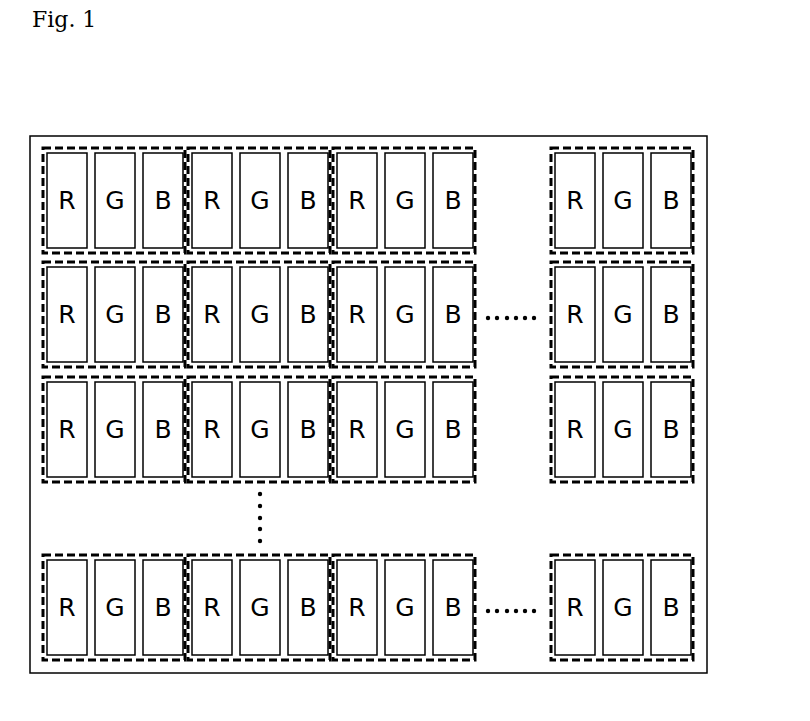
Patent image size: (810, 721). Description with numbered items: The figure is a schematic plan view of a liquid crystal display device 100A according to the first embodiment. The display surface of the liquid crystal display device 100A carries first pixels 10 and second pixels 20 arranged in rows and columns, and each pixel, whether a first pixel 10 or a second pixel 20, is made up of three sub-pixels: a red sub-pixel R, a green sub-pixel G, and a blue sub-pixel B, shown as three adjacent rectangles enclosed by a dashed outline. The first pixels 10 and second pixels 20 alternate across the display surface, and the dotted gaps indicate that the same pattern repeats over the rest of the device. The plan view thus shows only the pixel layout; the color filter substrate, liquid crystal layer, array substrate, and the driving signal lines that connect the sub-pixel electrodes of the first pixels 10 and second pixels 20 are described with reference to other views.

The liquid crystal display device 100A is at (773, 83).
The first pixels 10 is at (112, 150).
The second pixels 20 is at (258, 150).